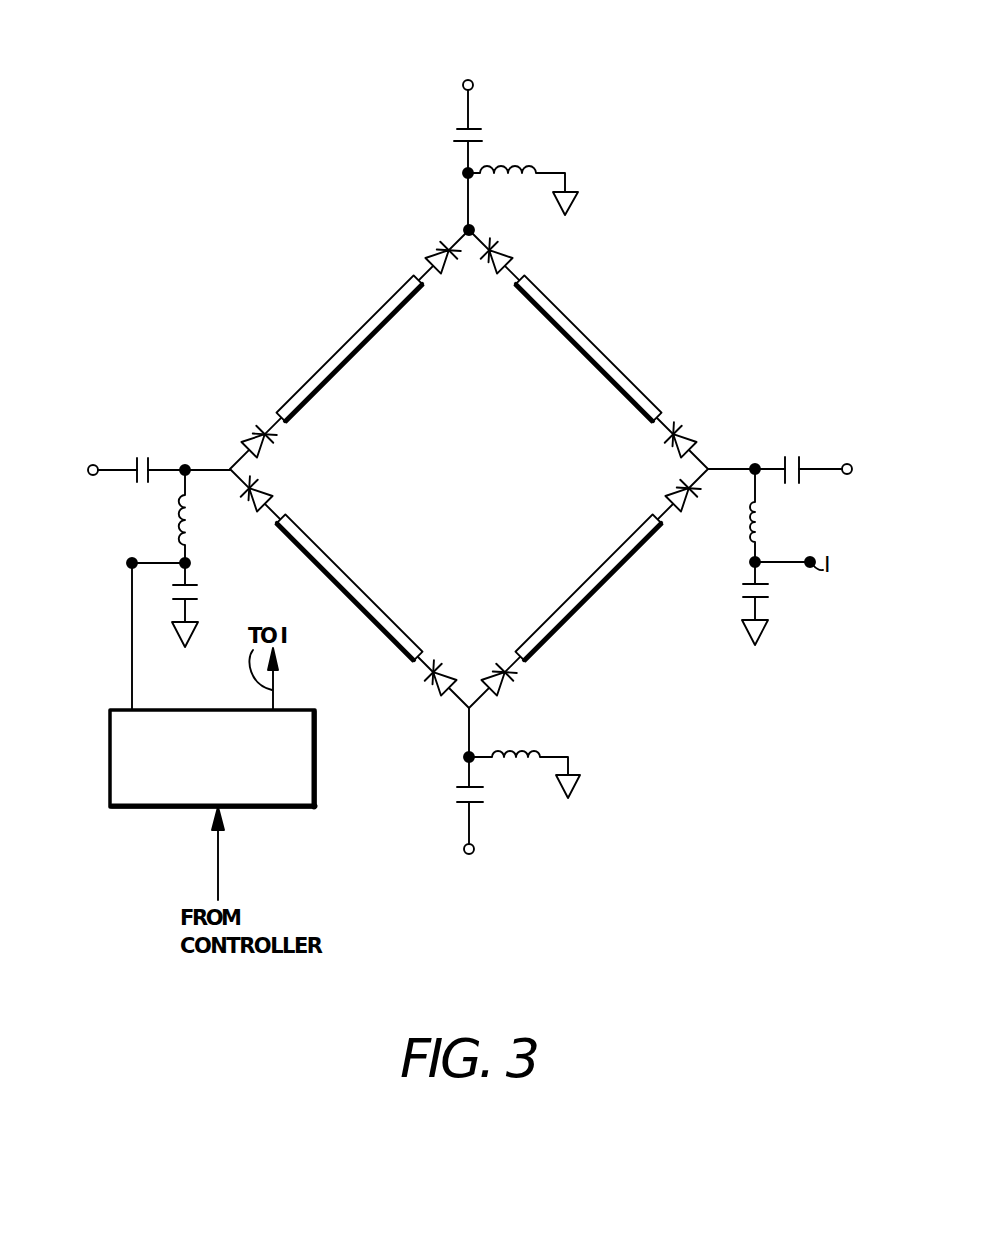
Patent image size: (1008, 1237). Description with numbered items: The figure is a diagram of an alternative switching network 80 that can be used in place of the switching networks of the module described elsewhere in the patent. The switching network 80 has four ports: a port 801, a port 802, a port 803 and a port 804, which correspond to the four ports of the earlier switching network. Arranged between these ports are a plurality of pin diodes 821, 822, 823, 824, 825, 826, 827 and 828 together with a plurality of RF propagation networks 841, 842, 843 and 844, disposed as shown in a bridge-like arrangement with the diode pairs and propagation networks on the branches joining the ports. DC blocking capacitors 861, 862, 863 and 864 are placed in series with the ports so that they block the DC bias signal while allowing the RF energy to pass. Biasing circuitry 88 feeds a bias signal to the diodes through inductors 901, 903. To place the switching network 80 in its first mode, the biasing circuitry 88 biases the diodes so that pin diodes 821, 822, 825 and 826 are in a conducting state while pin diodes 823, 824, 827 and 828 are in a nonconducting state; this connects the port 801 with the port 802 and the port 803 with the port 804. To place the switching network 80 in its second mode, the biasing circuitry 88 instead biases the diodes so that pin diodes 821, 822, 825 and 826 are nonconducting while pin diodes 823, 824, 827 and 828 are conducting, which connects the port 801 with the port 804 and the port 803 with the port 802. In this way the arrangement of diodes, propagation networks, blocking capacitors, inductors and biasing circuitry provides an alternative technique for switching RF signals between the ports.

The switching network 80 is at (712, 302).
The port 801 is at (90, 466).
The port 802 is at (470, 79).
The port 803 is at (851, 473).
The port 804 is at (471, 856).
The pin diode 821 is at (255, 436).
The pin diode 822 is at (428, 256).
The pin diode 823 is at (506, 258).
The pin diode 824 is at (689, 433).
The pin diode 825 is at (689, 506).
The pin diode 826 is at (506, 693).
The pin diode 827 is at (436, 695).
The pin diode 828 is at (250, 506).
The RF propagation network 841 is at (358, 332).
The RF propagation network 842 is at (568, 316).
The RF propagation network 843 is at (618, 580).
The RF propagation network 844 is at (316, 575).
The DC blocking capacitor 861 is at (151, 462).
The DC blocking capacitor 862 is at (478, 128).
The DC blocking capacitor 863 is at (798, 457).
The DC blocking capacitor 864 is at (480, 801).
The biasing circuitry 88 is at (110, 737).
The inductor 901 is at (180, 525).
The inductor 903 is at (763, 518).